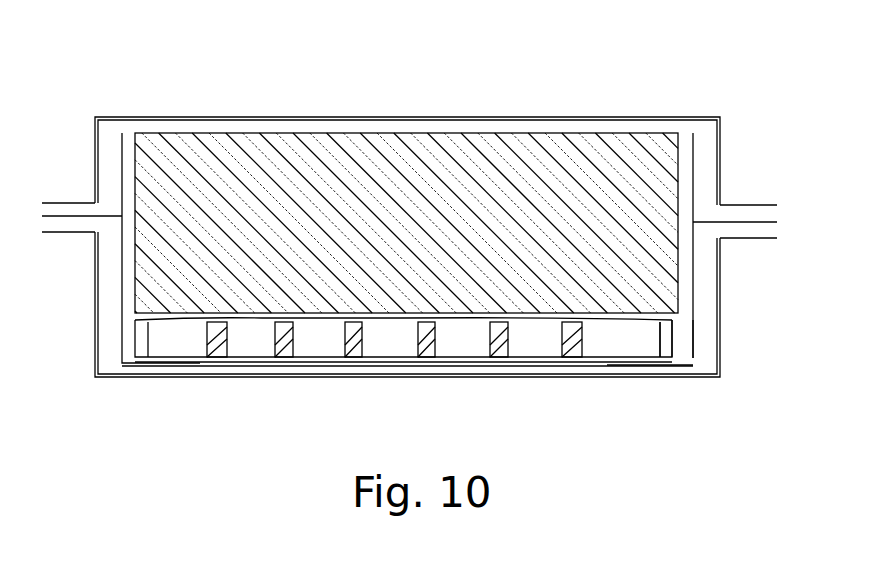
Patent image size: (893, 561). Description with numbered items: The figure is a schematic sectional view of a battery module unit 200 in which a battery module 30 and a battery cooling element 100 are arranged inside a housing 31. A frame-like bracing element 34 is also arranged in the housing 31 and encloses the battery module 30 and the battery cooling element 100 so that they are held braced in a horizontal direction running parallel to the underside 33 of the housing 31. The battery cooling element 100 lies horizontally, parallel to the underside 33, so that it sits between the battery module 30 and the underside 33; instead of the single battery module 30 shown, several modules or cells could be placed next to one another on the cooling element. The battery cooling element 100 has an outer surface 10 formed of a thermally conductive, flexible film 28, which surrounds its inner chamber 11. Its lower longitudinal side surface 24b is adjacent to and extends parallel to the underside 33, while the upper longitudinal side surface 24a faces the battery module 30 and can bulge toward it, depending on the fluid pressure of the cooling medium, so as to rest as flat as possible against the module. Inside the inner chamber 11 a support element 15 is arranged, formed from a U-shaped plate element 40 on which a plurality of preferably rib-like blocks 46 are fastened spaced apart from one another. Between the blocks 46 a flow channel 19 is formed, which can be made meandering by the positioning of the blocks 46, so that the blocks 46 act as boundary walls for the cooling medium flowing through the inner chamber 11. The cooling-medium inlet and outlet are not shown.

The battery module unit 200 is at (240, 102).
The bracing element 34 is at (122, 172).
The longitudinal side surface 24a is at (233, 313).
The outer surface 10 is at (307, 313).
The battery module 30 is at (458, 202).
The thermally conductive, flexible film 28 is at (513, 313).
The support element 15 is at (603, 337).
The battery cooling element 100 is at (683, 350).
The housing 31 is at (95, 316).
The inner chamber 11 is at (180, 347).
The underside 33 is at (250, 380).
The longitudinal side surface 24b is at (367, 360).
The U-shaped plate element 40 is at (457, 360).
The blocks 46 is at (500, 360).
The flow channel 19 is at (547, 345).